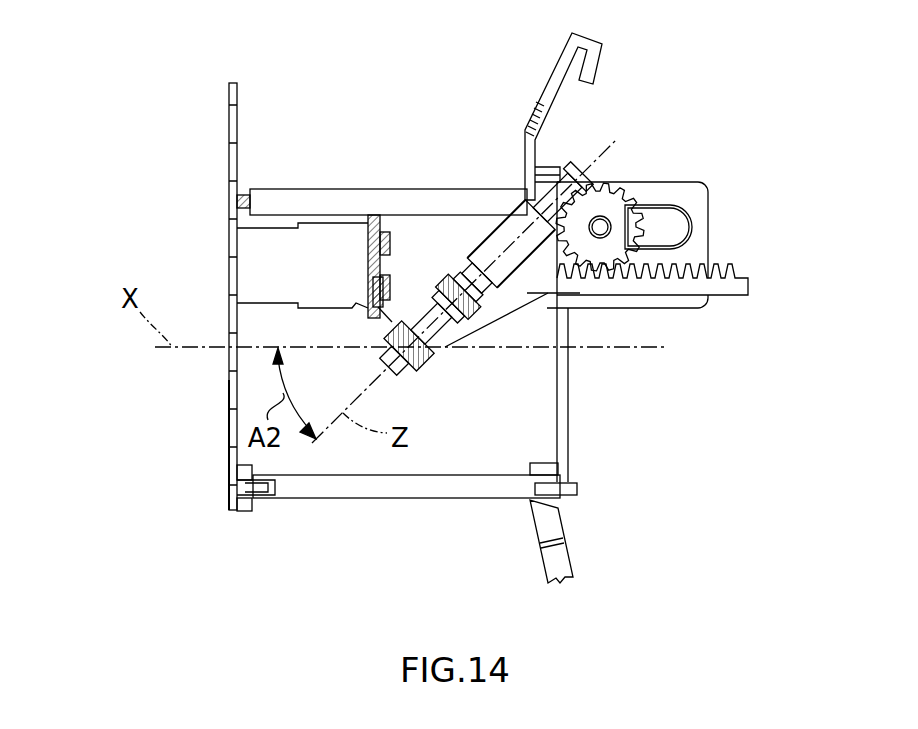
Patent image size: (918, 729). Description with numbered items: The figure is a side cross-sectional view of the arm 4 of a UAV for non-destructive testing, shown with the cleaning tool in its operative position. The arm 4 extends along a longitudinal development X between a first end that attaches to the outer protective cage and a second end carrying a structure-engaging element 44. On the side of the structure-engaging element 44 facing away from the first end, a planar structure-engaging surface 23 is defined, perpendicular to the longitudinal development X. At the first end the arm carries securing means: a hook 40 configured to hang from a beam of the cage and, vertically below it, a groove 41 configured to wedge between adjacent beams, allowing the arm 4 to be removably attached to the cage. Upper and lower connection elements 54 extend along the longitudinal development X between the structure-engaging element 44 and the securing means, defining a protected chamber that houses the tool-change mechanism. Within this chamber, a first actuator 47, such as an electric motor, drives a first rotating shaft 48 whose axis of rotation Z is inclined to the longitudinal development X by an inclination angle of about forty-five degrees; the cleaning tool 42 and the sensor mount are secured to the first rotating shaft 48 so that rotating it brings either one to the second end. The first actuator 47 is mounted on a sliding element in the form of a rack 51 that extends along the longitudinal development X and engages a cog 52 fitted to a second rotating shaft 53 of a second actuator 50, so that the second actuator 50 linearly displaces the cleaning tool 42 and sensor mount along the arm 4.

The arm 4 is at (102, 40).
The structure-engaging element 44 is at (215, 115).
The structure-engaging surface 23 is at (227, 443).
The connection element 54 is at (346, 203).
The cleaning tool 42 is at (317, 270).
The first rotating shaft 48 is at (433, 305).
The first actuator 47 is at (520, 218).
The hook 40 is at (598, 60).
The groove 41 is at (560, 580).
The cog 52 is at (615, 212).
The second rotating shaft 53 is at (597, 217).
The second actuator 50 is at (668, 225).
The rack 51 is at (729, 286).